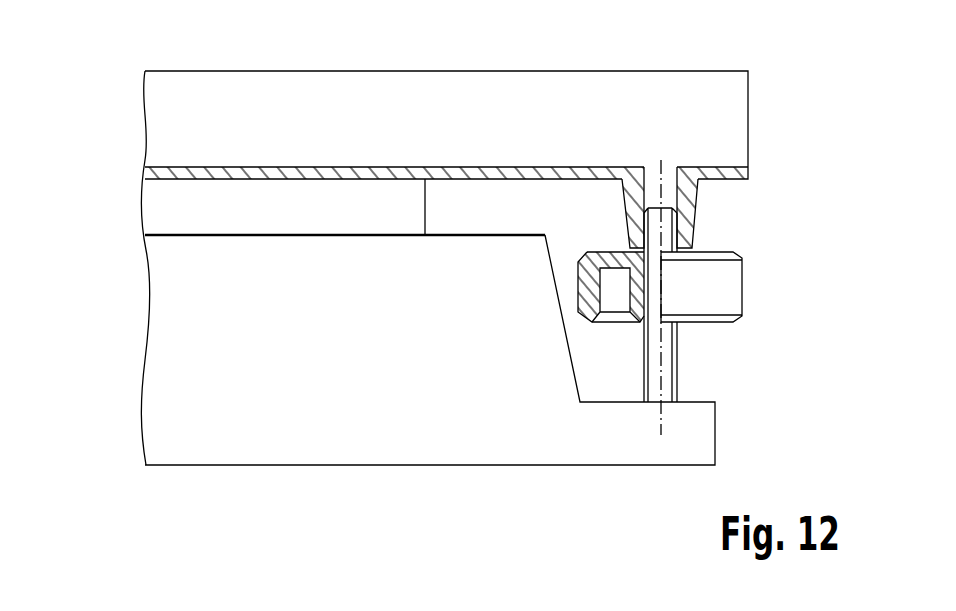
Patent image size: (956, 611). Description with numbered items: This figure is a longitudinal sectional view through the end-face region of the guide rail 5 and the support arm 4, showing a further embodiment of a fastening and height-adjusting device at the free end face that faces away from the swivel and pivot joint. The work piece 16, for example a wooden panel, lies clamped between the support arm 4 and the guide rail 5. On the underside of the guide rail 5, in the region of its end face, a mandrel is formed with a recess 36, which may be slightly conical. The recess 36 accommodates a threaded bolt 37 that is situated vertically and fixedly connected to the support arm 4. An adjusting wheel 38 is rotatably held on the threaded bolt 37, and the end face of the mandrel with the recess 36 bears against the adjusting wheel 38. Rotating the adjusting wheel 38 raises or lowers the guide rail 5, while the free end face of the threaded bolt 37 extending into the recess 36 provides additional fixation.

The support arm 4 is at (170, 345).
The guide rail 5 is at (170, 121).
The work piece 16 is at (415, 210).
The recess 36 is at (672, 185).
The threaded bolt 37 is at (668, 237).
The adjusting wheel 38 is at (712, 288).